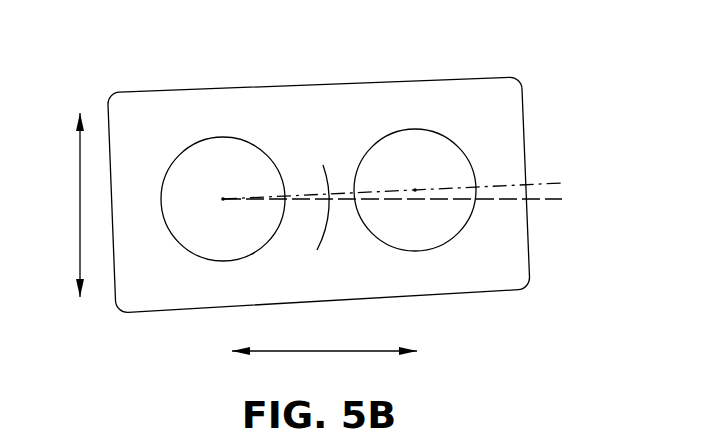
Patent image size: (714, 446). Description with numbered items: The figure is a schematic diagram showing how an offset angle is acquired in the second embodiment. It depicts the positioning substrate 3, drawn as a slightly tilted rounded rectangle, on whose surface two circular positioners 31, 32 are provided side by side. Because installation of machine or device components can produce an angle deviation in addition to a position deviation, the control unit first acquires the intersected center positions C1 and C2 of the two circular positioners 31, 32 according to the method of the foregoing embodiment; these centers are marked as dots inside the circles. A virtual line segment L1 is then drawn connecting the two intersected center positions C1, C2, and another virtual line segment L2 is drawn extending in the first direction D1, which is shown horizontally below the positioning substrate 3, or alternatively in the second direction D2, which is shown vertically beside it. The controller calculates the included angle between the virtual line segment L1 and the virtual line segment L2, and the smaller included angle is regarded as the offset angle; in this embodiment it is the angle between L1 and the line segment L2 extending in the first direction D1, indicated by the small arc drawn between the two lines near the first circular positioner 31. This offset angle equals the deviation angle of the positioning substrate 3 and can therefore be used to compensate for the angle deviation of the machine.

The positioning substrate 3 is at (510, 263).
The circular positioner 31 is at (180, 155).
The circular positioner 32 is at (458, 146).
The intersected center position C1 is at (223, 199).
The intersected center position C2 is at (415, 190).
The virtual line segment L1 is at (408, 184).
The virtual line segment L2 is at (408, 200).
The first direction D1 is at (324, 339).
The second direction D2 is at (61, 205).